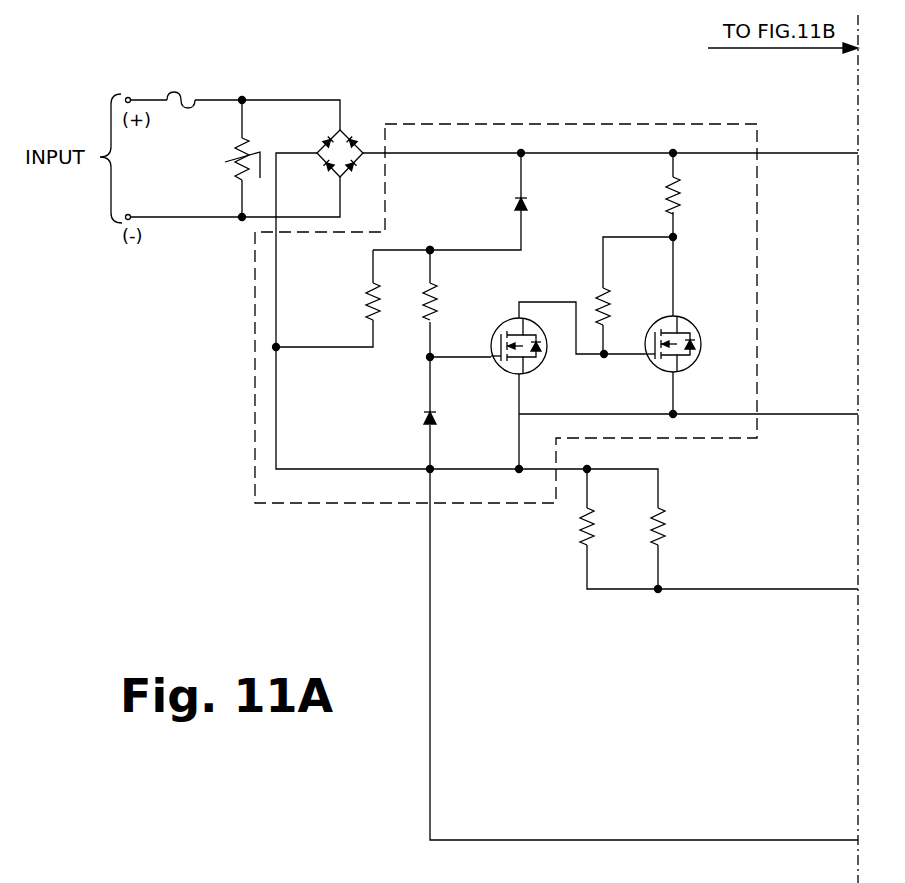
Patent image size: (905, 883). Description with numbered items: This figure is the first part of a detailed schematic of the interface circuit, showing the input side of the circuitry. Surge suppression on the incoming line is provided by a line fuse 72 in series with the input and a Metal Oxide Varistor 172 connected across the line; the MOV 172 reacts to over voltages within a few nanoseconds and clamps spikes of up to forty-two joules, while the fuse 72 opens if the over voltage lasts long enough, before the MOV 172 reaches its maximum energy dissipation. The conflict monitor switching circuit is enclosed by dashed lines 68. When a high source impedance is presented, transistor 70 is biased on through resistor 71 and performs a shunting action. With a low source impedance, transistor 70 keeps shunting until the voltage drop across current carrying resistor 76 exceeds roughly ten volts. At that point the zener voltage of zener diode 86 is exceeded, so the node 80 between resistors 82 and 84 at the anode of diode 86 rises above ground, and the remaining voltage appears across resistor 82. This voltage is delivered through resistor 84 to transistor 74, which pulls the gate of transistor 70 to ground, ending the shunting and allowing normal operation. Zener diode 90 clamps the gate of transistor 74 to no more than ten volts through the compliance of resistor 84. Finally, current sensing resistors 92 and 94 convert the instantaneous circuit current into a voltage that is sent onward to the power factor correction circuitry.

The conflict monitor switching circuit 68 is at (524, 124).
The line fuse 72 is at (183, 94).
The Metal Oxide Varistor 172 is at (237, 172).
The node 80 is at (430, 246).
The resistor 82 is at (365, 292).
The resistor 84 is at (438, 292).
The zener diode 86 is at (516, 199).
The zener diode 90 is at (425, 412).
The current carrying resistor 76 is at (680, 190).
The resistor 71 is at (610, 292).
The transistor 74 is at (536, 368).
The transistor 70 is at (690, 367).
The current sensing resistor 92 is at (594, 524).
The current sensing resistor 94 is at (670, 524).